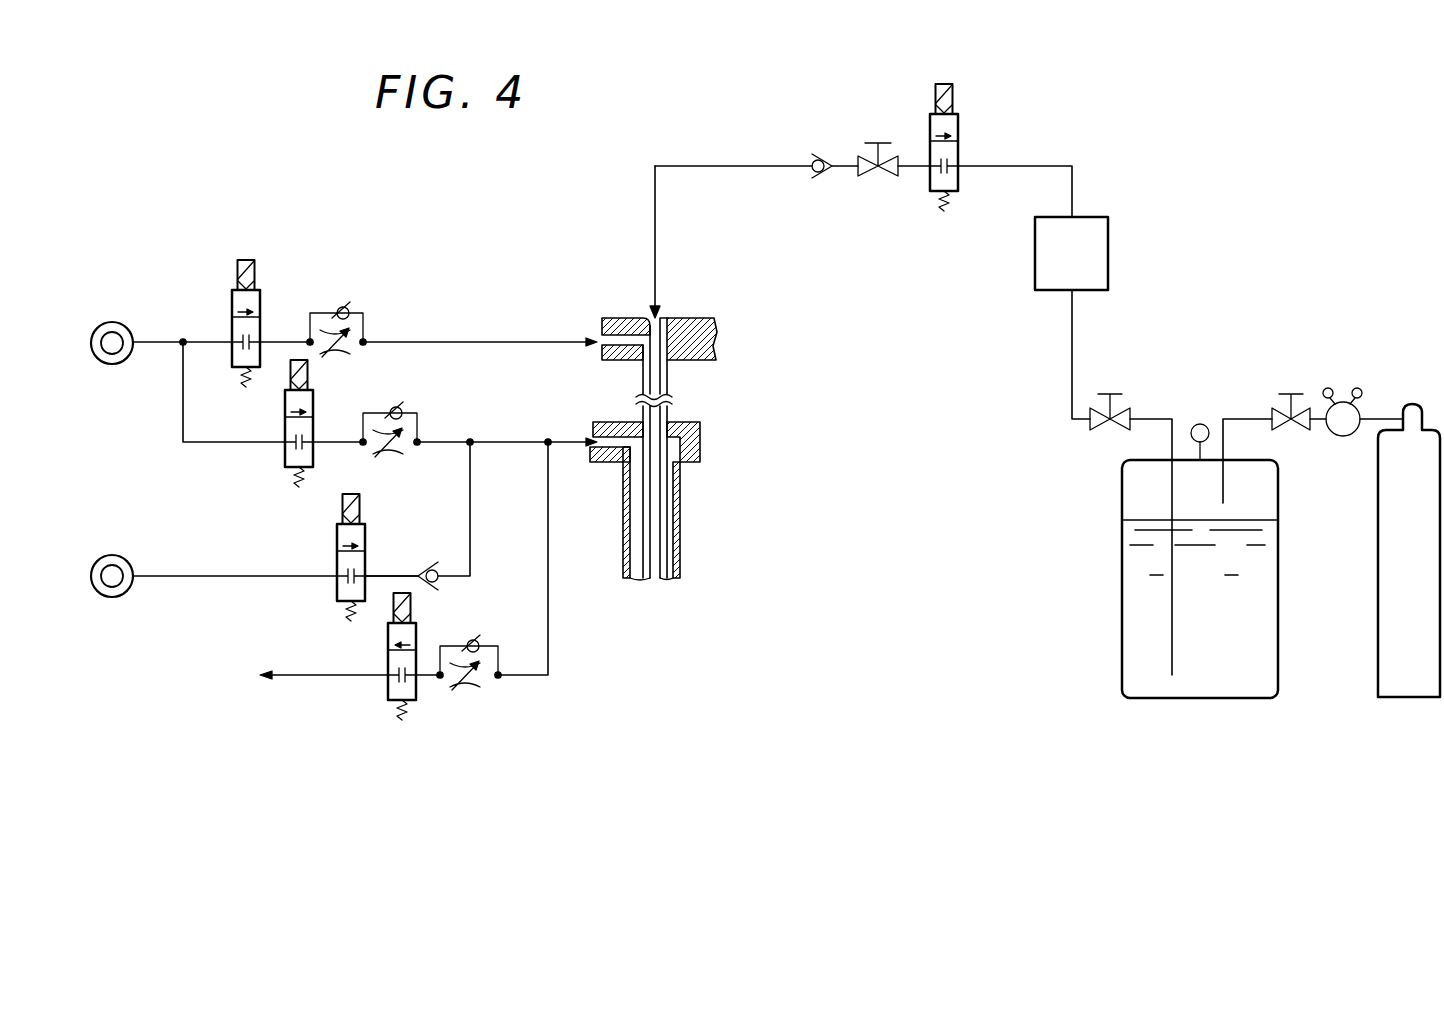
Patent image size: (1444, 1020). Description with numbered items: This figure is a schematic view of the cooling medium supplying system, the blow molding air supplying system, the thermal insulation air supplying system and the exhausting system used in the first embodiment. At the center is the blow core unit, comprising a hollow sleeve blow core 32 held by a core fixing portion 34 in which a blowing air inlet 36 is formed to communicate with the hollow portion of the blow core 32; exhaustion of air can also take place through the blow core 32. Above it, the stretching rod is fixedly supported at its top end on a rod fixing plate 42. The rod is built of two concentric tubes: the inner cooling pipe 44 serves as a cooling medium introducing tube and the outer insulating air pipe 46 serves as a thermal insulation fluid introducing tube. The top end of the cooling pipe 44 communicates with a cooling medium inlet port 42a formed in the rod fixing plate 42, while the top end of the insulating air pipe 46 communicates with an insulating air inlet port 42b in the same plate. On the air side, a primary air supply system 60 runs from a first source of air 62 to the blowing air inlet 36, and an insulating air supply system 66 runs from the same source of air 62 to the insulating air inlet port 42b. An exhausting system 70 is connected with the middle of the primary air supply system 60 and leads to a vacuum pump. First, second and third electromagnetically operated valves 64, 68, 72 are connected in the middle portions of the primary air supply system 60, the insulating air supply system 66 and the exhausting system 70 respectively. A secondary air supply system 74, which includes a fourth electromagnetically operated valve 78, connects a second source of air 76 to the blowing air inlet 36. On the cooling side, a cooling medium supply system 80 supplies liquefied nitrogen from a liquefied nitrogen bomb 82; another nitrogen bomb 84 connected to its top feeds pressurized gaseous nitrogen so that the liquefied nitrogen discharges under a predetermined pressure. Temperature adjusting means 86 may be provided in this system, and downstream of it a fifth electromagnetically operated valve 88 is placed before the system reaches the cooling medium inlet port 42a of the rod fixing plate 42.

The blow core 32 is at (672, 483).
The core fixing portion 34 is at (672, 421).
The blowing air inlet 36 is at (595, 437).
The rod fixing plate 42 is at (670, 310).
The cooling medium inlet port 42a is at (658, 318).
The insulating air inlet port 42b is at (602, 330).
The cooling pipe 44 is at (657, 552).
The insulating air pipe 46 is at (663, 517).
The primary air supply system 60 is at (428, 432).
The first source of air 62 is at (130, 331).
The first electromagnetically operated valve 64 is at (283, 458).
The insulating air supply system 66 is at (390, 300).
The second electromagnetically operated valve 68 is at (232, 354).
The exhausting system 70 is at (516, 697).
The third electromagnetically operated valve 72 is at (387, 697).
The secondary air supply system 74 is at (375, 560).
The second source of air 76 is at (127, 594).
The fourth electromagnetically operated valve 78 is at (333, 587).
The cooling medium supply system 80 is at (1071, 155).
The liquefied nitrogen bomb 82 is at (1203, 683).
The nitrogen bomb 84 is at (1398, 682).
The temperature adjusting means 86 is at (1108, 262).
The fifth electromagnetically operated valve 88 is at (957, 125).